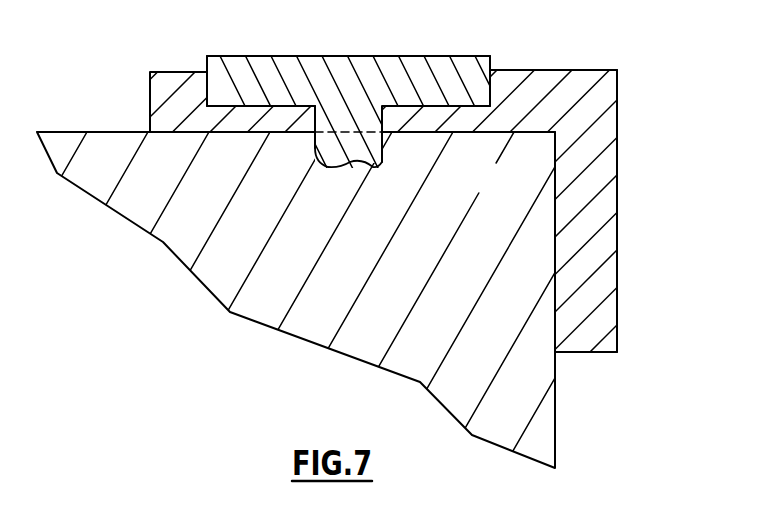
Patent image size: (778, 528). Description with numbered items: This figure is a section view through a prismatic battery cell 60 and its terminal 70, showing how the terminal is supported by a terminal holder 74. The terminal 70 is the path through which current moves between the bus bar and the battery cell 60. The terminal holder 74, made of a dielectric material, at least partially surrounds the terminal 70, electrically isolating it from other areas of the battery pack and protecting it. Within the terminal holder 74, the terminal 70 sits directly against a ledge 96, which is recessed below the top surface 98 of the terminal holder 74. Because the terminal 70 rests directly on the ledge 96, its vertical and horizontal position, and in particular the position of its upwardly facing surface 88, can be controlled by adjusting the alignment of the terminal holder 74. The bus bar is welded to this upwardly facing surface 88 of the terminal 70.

The battery cell 60 is at (513, 193).
The terminal 70 is at (415, 72).
The terminal holder 74 is at (616, 160).
The upwardly facing surface 88 is at (359, 55).
The ledge 96 is at (257, 115).
The top surface 98 is at (557, 70).